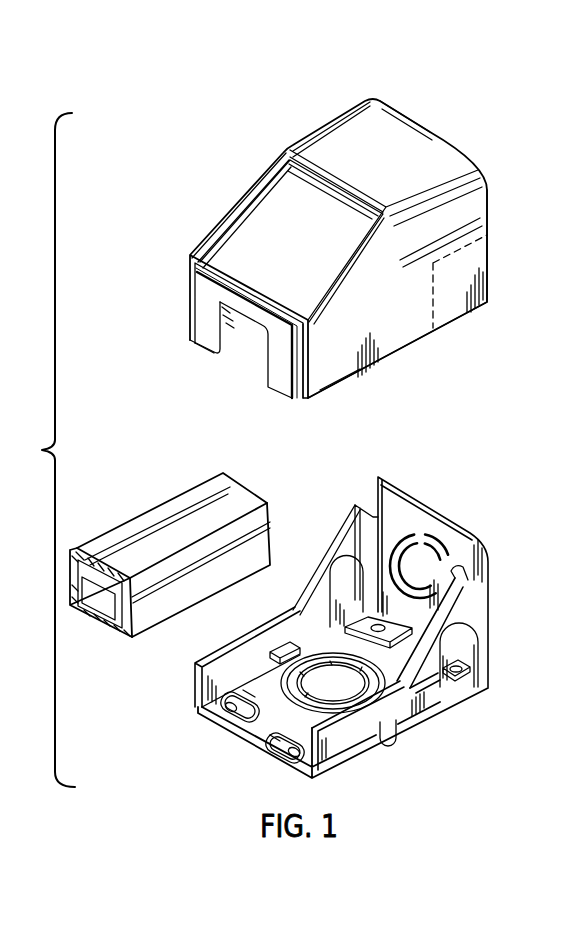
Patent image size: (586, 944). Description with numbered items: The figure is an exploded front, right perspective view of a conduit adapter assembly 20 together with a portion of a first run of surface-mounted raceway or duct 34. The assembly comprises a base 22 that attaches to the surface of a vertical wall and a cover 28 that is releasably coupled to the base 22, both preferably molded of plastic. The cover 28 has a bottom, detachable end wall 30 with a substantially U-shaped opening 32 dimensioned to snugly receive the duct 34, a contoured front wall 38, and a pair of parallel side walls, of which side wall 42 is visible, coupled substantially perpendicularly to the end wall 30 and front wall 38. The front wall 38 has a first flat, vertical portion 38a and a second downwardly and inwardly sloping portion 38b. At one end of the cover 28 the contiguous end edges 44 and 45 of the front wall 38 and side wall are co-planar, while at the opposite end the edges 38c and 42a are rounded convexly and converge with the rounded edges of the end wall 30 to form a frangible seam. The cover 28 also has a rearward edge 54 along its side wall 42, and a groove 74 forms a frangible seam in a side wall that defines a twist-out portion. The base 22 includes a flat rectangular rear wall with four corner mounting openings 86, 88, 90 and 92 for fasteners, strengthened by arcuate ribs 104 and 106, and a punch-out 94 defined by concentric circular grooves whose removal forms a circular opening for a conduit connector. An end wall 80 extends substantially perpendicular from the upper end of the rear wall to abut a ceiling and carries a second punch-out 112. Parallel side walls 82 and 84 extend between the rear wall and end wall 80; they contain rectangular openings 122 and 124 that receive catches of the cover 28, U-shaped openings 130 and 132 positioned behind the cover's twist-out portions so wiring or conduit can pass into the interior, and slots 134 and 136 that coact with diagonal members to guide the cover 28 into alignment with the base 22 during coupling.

The conduit adapter assembly 20 is at (122, 200).
The base 22 is at (448, 505).
The cover 28 is at (236, 194).
The detachable end wall 30 is at (279, 392).
The U-shaped opening 32 is at (227, 347).
The duct 34 is at (124, 524).
The front wall 38 is at (250, 241).
The first flat vertical portion 38a is at (333, 122).
The second sloping portion 38b is at (222, 212).
The end edge of front wall 38c is at (212, 273).
The side wall 42 is at (402, 328).
The end edge of side wall 42a is at (307, 396).
The end edge of front wall 44 is at (442, 134).
The end edge of side wall 45 is at (488, 253).
The rearward edge 54 is at (347, 378).
The groove 74 is at (477, 307).
The end wall 80 is at (410, 495).
The side wall 82 is at (217, 648).
The side wall 84 is at (430, 695).
The mounting opening 86 is at (223, 710).
The mounting opening 88 is at (296, 757).
The mounting opening 90 is at (367, 623).
The mounting opening 92 is at (458, 671).
The punch-out 94 is at (313, 688).
The arcuate rib 104 is at (252, 717).
The arcuate rib 106 is at (276, 732).
The second punch-out 112 is at (447, 557).
The rectangular opening 122 is at (376, 738).
The rectangular opening 124 is at (286, 650).
The U-shaped opening 130 is at (338, 592).
The U-shaped opening 132 is at (472, 653).
The slot 134 is at (355, 508).
The slot 136 is at (459, 573).